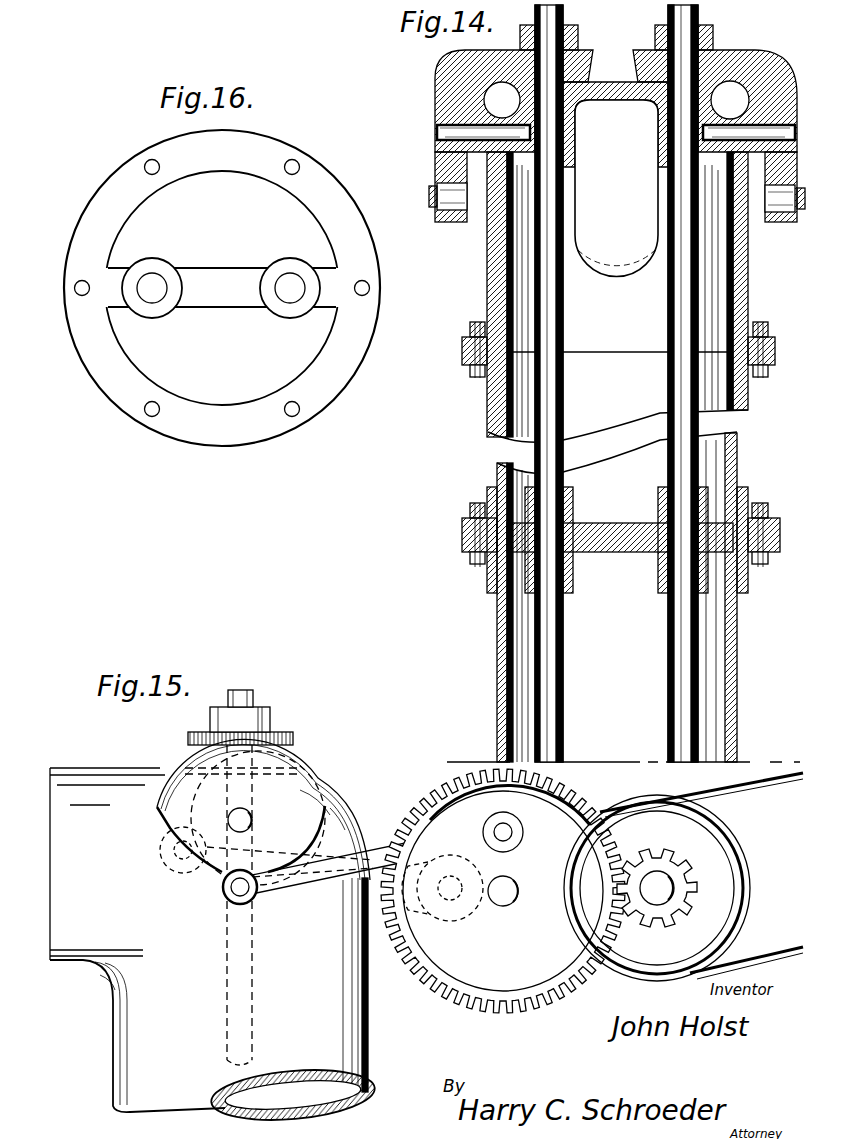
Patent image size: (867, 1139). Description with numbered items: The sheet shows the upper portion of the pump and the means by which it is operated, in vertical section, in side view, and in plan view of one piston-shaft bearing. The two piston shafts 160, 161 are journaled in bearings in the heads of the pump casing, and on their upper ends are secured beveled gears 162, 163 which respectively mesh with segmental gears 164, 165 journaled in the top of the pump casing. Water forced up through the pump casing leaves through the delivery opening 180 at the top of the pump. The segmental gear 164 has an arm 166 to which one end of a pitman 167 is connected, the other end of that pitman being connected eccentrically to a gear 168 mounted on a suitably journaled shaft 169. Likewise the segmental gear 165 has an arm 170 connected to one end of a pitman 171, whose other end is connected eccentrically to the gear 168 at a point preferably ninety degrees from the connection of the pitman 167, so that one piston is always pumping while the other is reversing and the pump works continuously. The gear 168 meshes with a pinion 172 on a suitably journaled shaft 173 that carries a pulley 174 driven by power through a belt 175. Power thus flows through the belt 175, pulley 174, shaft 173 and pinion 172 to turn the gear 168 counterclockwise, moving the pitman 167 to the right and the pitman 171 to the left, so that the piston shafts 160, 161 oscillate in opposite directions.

In FIG. 14, the piston shaft 160 is at (685, 677).
In FIG. 14, the piston shaft 161 is at (548, 670).
In FIG. 15, the piston shaft 161 is at (255, 698).
In FIG. 14, the beveled gear 162 is at (717, 53).
In FIG. 14, the beveled gear 163 is at (598, 62).
In FIG. 15, the beveled gear 163 is at (295, 740).
In FIG. 14, the segmental gear 164 is at (758, 68).
In FIG. 14, the segmental gear 165 is at (445, 92).
In FIG. 15, the segmental gear 165 is at (290, 790).
In FIG. 14, the arm 166 is at (772, 218).
In FIG. 15, the arm 166 is at (178, 843).
In FIG. 14, the pitman 167 is at (803, 227).
In FIG. 15, the pitman 167 is at (168, 870).
In FIG. 15, the gear 168 is at (506, 972).
In FIG. 15, the shaft 169 is at (520, 893).
In FIG. 14, the arm 170 is at (456, 222).
In FIG. 15, the arm 170 is at (215, 897).
In FIG. 14, the pitman 171 is at (432, 197).
In FIG. 15, the pitman 171 is at (378, 850).
In FIG. 15, the pinion 172 is at (695, 868).
In FIG. 15, the shaft 173 is at (665, 895).
In FIG. 15, the pulley 174 is at (728, 825).
In FIG. 15, the belt 175 is at (700, 793).
In FIG. 14, the delivery opening 180 is at (616, 188).